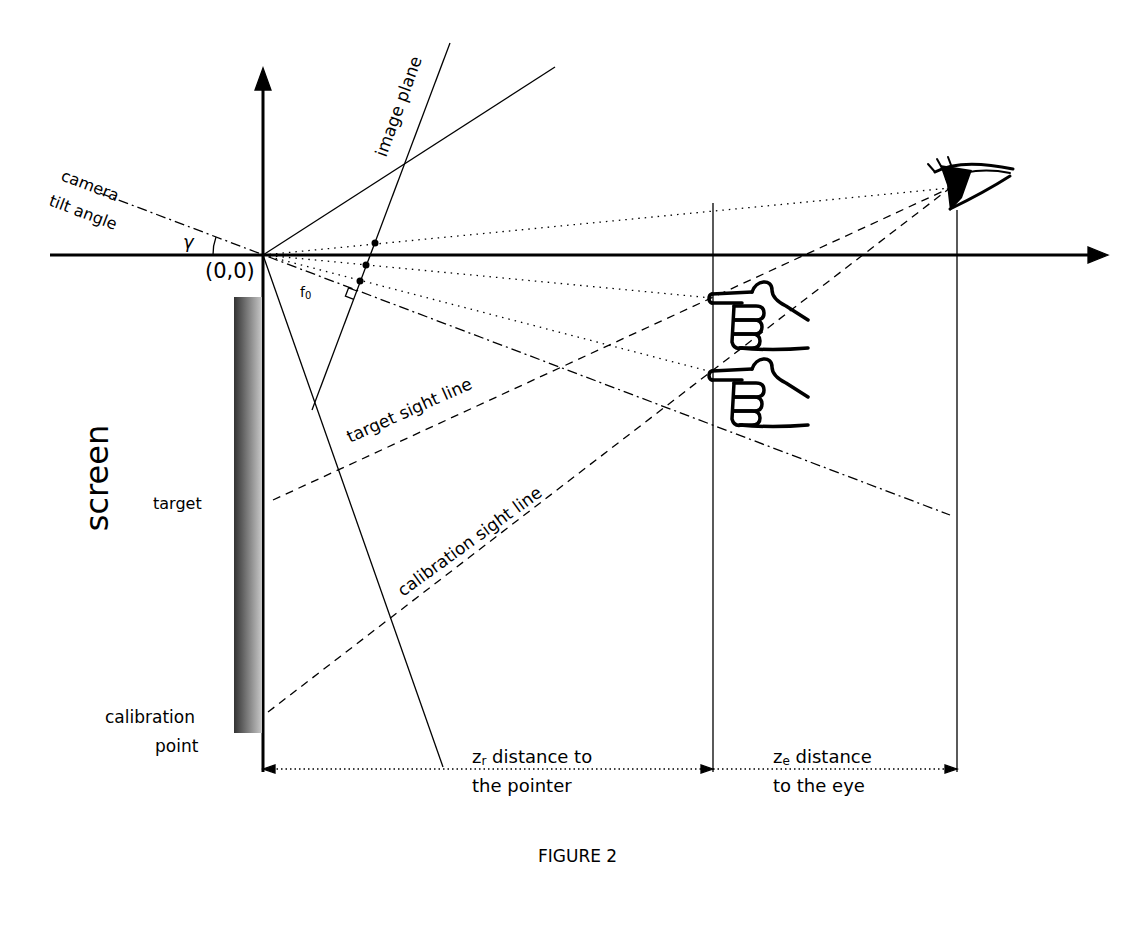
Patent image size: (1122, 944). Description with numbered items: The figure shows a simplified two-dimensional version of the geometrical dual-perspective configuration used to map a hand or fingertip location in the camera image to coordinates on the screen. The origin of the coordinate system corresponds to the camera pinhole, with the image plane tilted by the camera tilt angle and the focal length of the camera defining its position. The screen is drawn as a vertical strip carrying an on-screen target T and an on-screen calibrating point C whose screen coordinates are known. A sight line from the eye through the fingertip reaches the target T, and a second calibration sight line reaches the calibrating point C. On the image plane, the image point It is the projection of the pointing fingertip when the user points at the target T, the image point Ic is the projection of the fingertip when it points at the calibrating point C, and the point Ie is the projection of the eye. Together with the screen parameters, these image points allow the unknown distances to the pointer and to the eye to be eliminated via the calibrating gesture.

The on-screen target T is at (601, 359).
The on-screen calibrating point C is at (601, 465).
The eye image point Ie is at (382, 243).
The target fingertip image point It is at (372, 266).
The calibration fingertip image point Ic is at (366, 285).